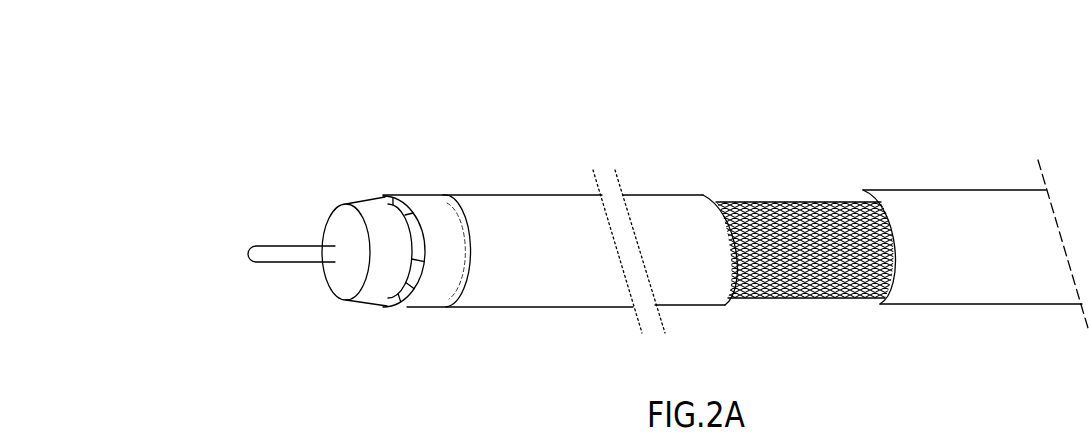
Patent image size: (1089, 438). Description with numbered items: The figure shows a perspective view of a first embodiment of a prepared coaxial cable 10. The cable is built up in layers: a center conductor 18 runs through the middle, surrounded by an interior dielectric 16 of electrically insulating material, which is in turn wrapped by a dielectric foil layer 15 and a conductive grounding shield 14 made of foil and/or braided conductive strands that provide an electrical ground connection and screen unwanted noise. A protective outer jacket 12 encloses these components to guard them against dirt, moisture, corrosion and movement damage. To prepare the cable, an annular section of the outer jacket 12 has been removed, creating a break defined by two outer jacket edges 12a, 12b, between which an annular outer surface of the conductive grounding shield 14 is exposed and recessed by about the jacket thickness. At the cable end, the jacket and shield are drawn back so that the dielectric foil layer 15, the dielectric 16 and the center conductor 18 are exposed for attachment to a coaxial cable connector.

The coaxial cable 10 is at (245, 127).
The protective outer jacket 12 is at (643, 208).
The outer jacket edge 12a is at (713, 203).
The outer jacket edge 12b is at (887, 213).
The conductive grounding shield 14 is at (785, 298).
The dielectric foil layer 15 is at (378, 220).
The interior dielectric 16 is at (335, 278).
The center conductor 18 is at (260, 254).